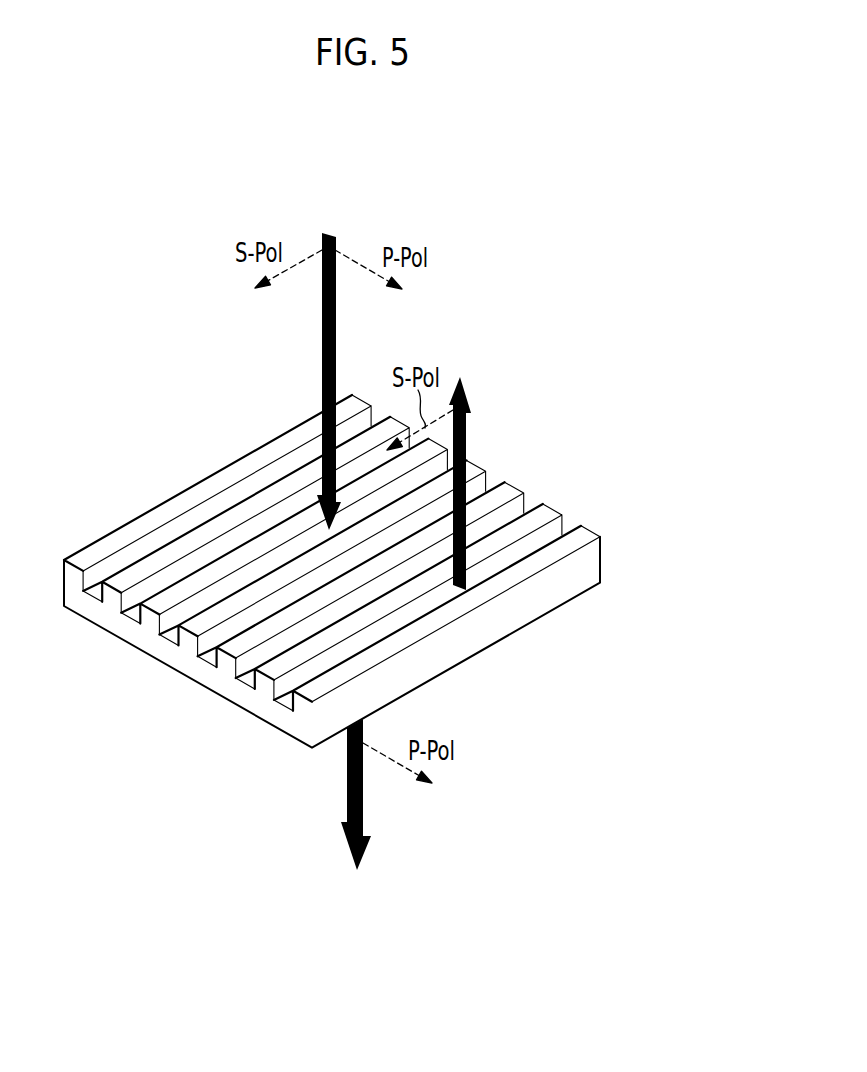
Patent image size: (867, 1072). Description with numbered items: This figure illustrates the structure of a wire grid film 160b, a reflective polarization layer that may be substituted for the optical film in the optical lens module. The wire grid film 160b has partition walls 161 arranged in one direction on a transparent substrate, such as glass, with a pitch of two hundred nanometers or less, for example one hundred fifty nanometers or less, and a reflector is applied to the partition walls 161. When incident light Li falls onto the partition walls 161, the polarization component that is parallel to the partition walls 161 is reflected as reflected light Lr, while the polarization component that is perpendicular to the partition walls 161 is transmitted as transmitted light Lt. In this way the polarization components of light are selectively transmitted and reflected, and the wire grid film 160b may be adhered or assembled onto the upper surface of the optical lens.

The wire grid film 160b is at (360, 571).
The partition walls 161 is at (158, 557).
The incident light Li is at (329, 364).
The reflected light Lr is at (471, 483).
The transmitted light Lt is at (356, 811).